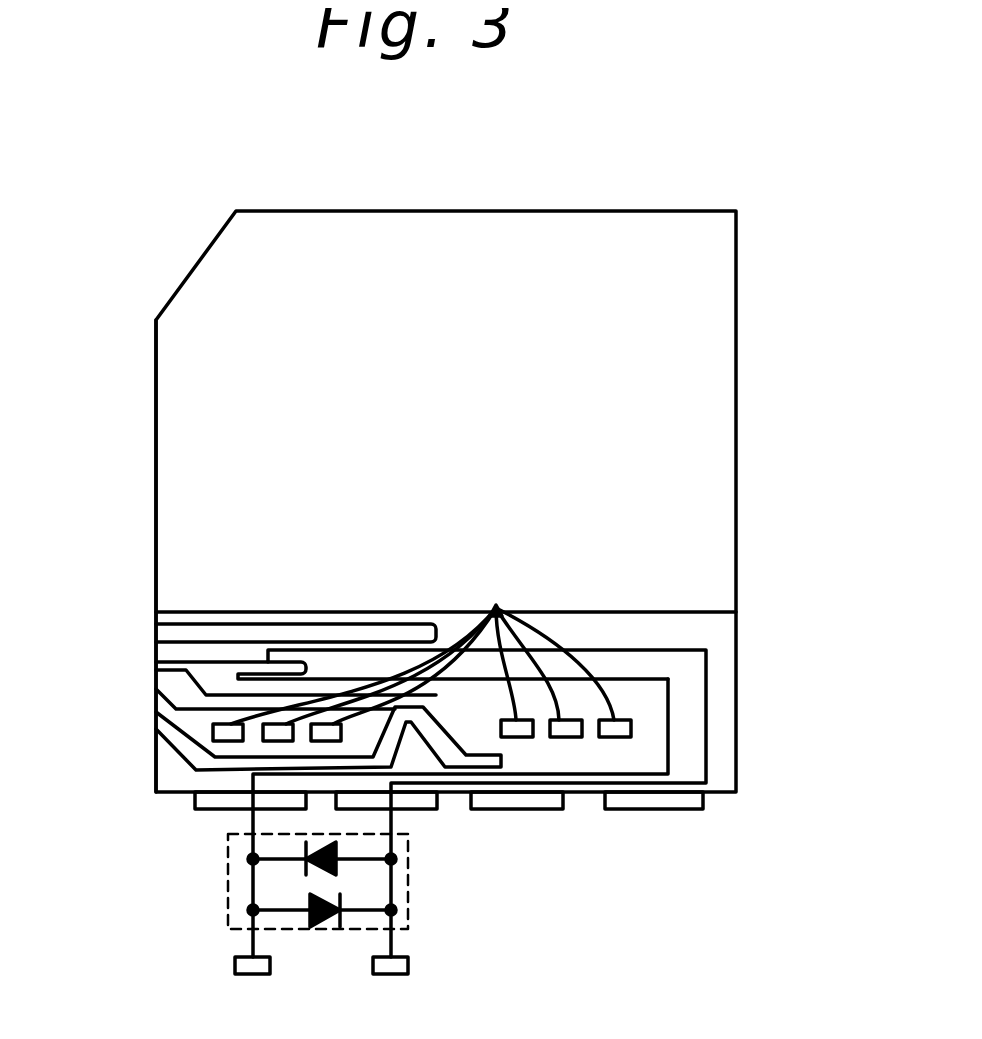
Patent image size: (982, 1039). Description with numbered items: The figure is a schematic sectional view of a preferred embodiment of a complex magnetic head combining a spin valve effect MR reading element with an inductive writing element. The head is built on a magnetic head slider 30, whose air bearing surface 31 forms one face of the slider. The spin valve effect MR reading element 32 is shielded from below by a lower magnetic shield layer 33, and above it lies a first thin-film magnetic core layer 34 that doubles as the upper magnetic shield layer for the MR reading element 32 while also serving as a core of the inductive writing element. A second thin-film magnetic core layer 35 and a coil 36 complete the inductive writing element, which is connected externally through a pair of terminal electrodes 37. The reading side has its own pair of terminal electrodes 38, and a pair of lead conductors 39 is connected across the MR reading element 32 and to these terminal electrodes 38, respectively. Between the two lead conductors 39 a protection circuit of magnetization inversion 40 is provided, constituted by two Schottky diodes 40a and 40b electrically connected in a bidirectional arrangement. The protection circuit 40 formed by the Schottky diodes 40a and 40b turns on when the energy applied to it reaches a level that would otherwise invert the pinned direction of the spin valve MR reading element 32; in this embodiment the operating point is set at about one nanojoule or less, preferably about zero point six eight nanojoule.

The magnetic head slider 30 is at (708, 294).
The air bearing surface 31 is at (152, 417).
The spin valve effect MR reading element 32 is at (158, 665).
The lower magnetic shield layer 33 is at (160, 632).
The first thin-film magnetic core layer 34 is at (158, 688).
The second thin-film magnetic core layer 35 is at (158, 728).
The coil 36 is at (422, 657).
The pair of terminal electrodes for the inductive writing element 37 is at (620, 803).
The pair of terminal electrodes for the MR reading element 38 is at (340, 808).
The pair of lead conductors 39 is at (665, 697).
The protection circuit of magnetization inversion 40 is at (322, 920).
The Schottky diode 40a is at (337, 845).
The Schottky diode 40b is at (327, 920).